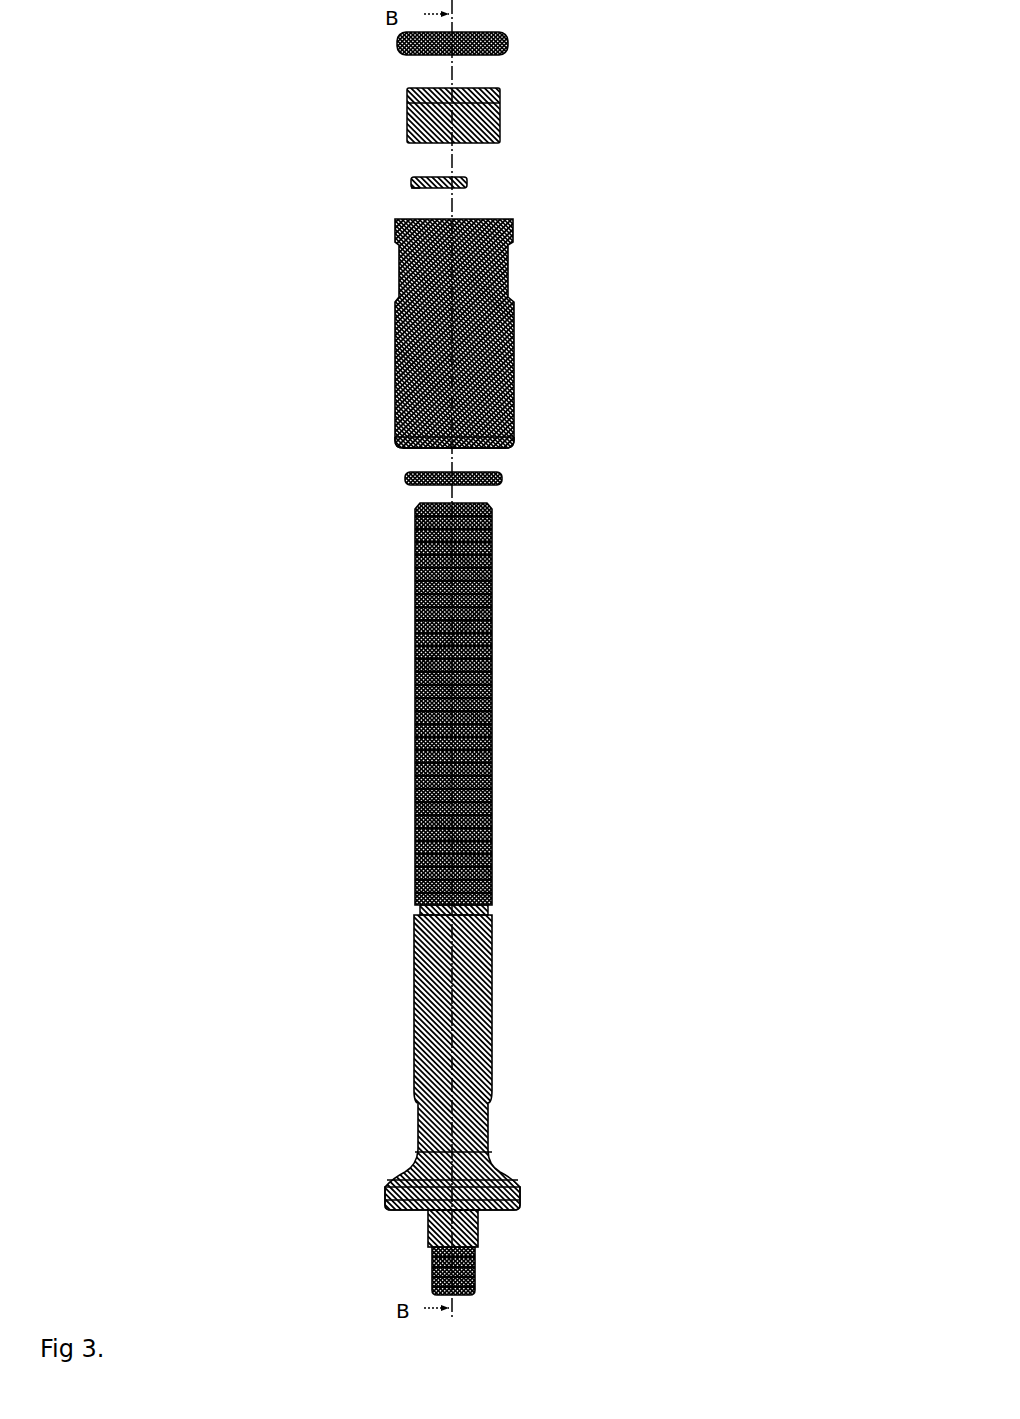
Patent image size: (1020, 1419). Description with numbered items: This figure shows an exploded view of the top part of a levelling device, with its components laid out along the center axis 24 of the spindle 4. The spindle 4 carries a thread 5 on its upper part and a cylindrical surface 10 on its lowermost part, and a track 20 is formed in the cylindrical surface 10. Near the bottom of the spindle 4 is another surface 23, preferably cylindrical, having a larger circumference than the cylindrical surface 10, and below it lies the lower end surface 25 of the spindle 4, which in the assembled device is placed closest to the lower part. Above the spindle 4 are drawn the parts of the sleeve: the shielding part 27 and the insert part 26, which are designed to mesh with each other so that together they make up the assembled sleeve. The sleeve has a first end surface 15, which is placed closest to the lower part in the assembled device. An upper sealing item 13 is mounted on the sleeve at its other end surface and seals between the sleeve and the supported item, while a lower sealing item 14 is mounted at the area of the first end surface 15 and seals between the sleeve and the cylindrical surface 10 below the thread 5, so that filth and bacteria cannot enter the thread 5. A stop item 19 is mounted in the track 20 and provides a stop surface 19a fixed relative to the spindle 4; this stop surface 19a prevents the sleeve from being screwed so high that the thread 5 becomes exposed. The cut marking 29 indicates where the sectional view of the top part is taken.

The spindle 4 is at (548, 840).
The thread 5 is at (418, 583).
The cylindrical surface 10 is at (410, 1008).
The upper sealing item 13 is at (392, 43).
The lower sealing item 14 is at (400, 482).
The first end surface 15 is at (408, 454).
The stop item 19 is at (474, 184).
The stop surface 19a is at (410, 192).
The track 20 is at (412, 912).
The surface with larger circumference 23 is at (386, 1202).
The center axis 24 is at (458, 460).
The lower end surface 25 is at (403, 1216).
The insert part 26 is at (408, 130).
The shielding part 27 is at (505, 403).
The cut marking 29 is at (455, 1308).